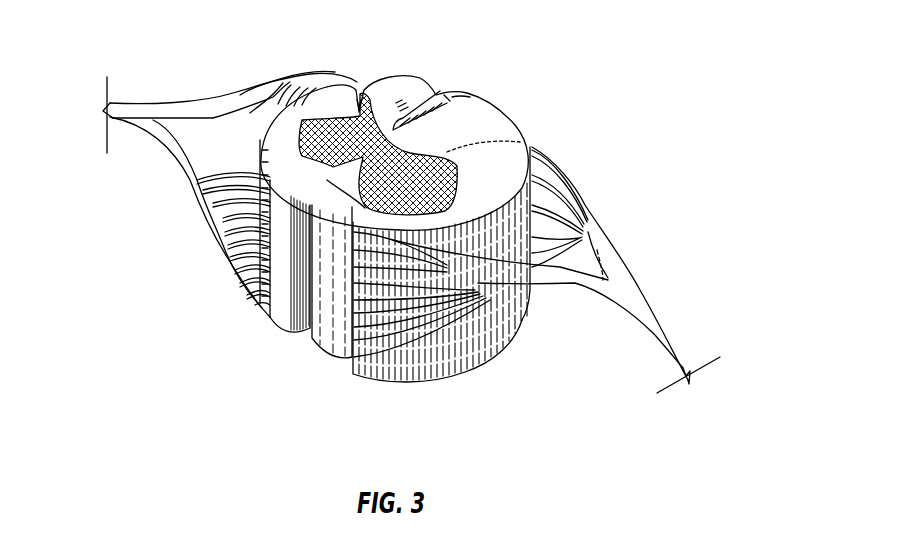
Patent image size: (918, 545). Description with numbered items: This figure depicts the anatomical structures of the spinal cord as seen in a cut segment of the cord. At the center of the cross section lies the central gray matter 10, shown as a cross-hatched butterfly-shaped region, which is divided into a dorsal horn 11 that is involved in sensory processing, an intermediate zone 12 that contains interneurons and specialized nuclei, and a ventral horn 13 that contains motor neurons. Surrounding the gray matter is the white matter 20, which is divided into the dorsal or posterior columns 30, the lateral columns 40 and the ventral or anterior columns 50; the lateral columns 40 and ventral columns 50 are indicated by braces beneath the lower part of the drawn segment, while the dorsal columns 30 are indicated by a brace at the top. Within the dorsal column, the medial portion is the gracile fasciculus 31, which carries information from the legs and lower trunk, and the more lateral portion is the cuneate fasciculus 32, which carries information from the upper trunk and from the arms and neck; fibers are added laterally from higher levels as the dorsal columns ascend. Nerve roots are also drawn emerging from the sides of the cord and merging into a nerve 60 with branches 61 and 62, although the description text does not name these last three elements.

The central gray matter 10 is at (455, 171).
The dorsal horn 11 is at (360, 102).
The intermediate zone 12 is at (352, 115).
The ventral horn 13 is at (303, 130).
The white matter 20 is at (528, 147).
The dorsal columns 30 is at (371, 58).
The gracile fasciculus 31 is at (430, 91).
The cuneate fasciculus 32 is at (390, 78).
The lateral columns 40 is at (531, 312).
The ventral columns 50 is at (353, 373).
The spinal nerve 60 is at (612, 242).
The ventral root 61 is at (573, 284).
The spinal nerve branch 62 is at (682, 348).